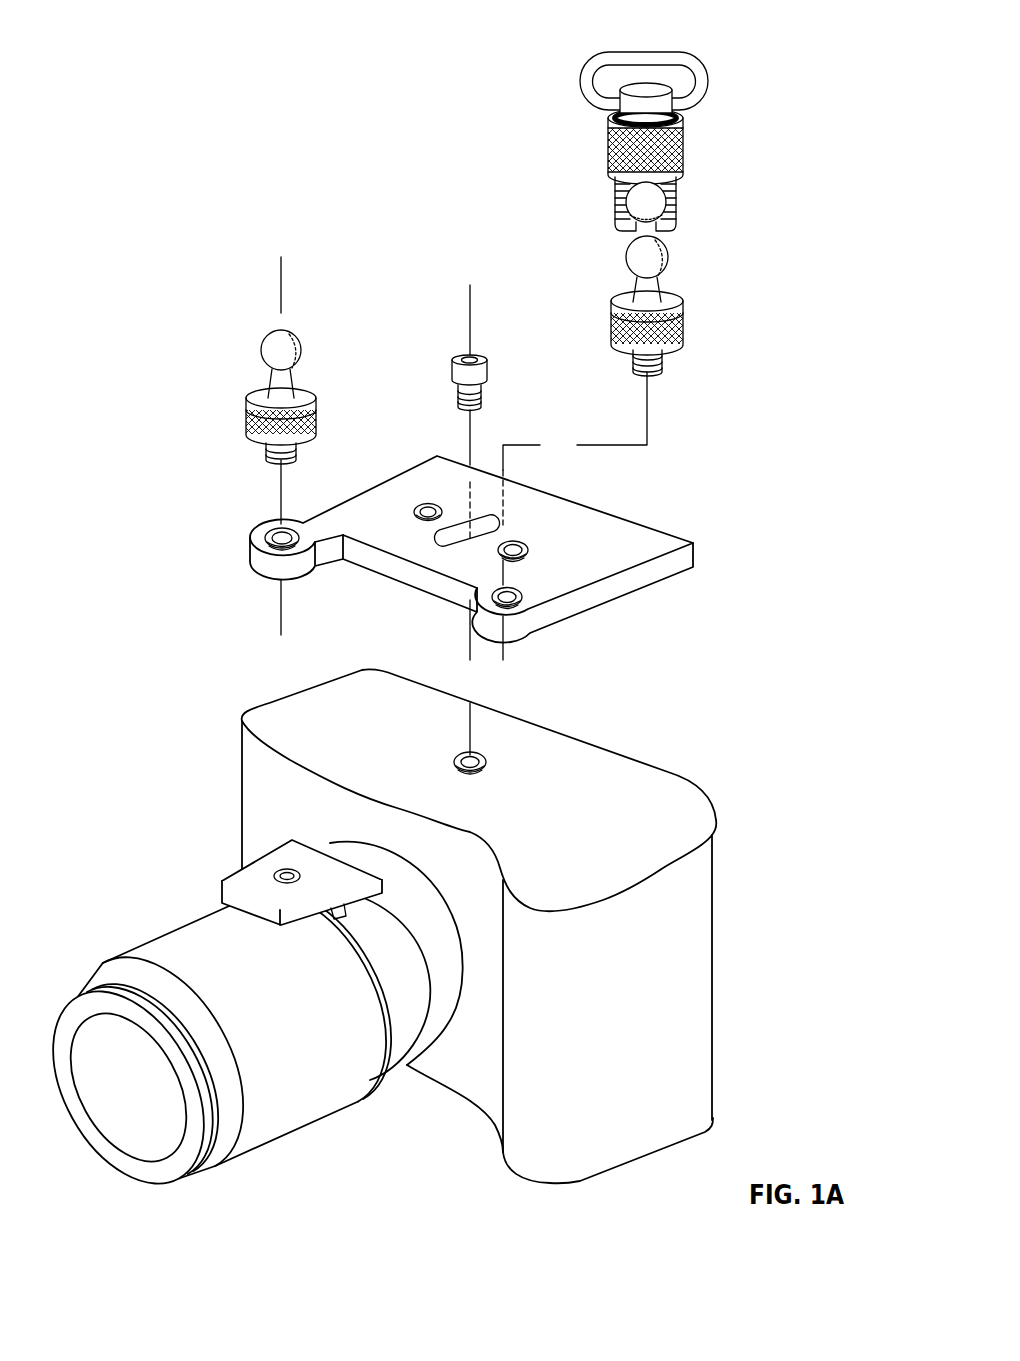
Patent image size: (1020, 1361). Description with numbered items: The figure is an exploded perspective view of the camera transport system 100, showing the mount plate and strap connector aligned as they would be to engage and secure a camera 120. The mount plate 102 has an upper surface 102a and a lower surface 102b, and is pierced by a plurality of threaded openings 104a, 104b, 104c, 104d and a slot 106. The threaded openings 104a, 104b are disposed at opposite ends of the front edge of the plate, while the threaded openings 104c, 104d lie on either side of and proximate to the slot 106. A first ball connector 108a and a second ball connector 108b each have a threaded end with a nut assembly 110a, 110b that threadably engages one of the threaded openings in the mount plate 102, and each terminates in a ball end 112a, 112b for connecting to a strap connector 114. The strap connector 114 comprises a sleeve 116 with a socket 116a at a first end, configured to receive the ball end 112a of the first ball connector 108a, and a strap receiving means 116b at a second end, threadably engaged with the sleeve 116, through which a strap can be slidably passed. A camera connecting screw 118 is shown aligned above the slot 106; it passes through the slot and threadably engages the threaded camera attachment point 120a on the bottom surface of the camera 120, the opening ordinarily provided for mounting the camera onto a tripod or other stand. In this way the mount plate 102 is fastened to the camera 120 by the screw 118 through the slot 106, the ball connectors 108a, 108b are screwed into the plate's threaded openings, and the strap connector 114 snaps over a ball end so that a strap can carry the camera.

The camera transport system 100 is at (373, 66).
The mount plate 102 is at (724, 566).
The upper surface 102a is at (661, 541).
The lower surface 102b is at (668, 592).
The threaded opening 104a is at (518, 600).
The threaded opening 104b is at (264, 537).
The threaded opening 104c is at (527, 548).
The threaded opening 104d is at (427, 503).
The slot 106 is at (488, 526).
The first ball connector 108a is at (581, 303).
The second ball connector 108b is at (201, 404).
The nut assembly 110a is at (665, 358).
The nut assembly 110b is at (266, 452).
The ball end 112a is at (676, 258).
The ball end 112b is at (258, 347).
The strap connector 114 is at (548, 152).
The sleeve 116 is at (690, 146).
The socket 116a is at (677, 202).
The strap receiving means 116b is at (711, 70).
The camera connecting screw 118 is at (455, 358).
The camera 120 is at (191, 757).
The threaded camera attachment point 120a is at (481, 760).